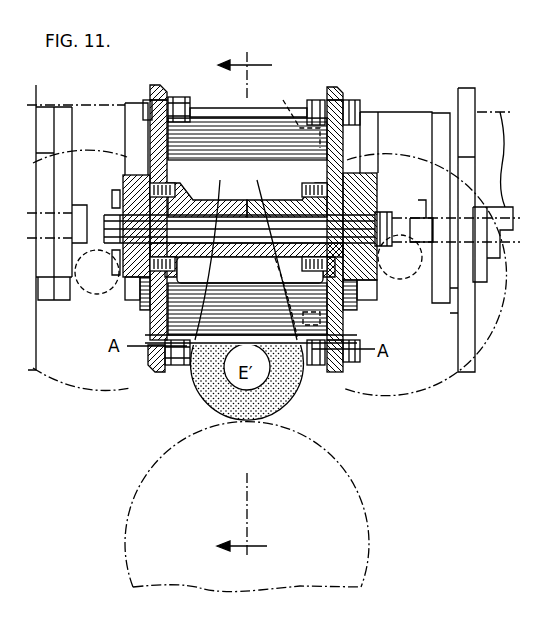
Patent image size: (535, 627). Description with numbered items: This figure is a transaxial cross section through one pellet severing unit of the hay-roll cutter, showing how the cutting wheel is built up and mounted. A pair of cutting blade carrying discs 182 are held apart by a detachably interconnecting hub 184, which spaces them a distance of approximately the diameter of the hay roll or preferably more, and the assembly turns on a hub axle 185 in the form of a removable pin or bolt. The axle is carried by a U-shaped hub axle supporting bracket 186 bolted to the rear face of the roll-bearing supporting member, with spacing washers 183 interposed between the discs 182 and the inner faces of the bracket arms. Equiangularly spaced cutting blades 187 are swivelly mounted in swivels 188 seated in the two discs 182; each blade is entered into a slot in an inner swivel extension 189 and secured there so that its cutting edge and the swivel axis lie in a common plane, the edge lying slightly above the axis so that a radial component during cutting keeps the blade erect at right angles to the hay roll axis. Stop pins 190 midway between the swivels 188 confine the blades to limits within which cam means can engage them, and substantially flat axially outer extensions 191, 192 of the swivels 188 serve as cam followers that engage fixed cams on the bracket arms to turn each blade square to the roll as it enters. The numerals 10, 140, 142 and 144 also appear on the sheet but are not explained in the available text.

The direction arrow / axis 10 is at (256, 305).
The grinding wheels 140 is at (78, 394).
The rail wheel / tire 142 is at (313, 445).
The wheel flanges 144 is at (122, 276).
The cutting blade carrying discs 182 is at (152, 86).
The spacing washers 183 is at (148, 168).
The detachably interconnecting hub 184 is at (205, 203).
The hub axle 185 is at (255, 203).
The U-shaped hub axle supporting bracket 186 is at (131, 105).
The cutting blades 187 is at (220, 125).
The swivels 188 is at (160, 102).
The inner swivel extension 189 is at (315, 100).
The stop pins 190 is at (287, 212).
The axially outer swivel extension 191 is at (357, 103).
The axially outer swivel extension 192 is at (143, 97).